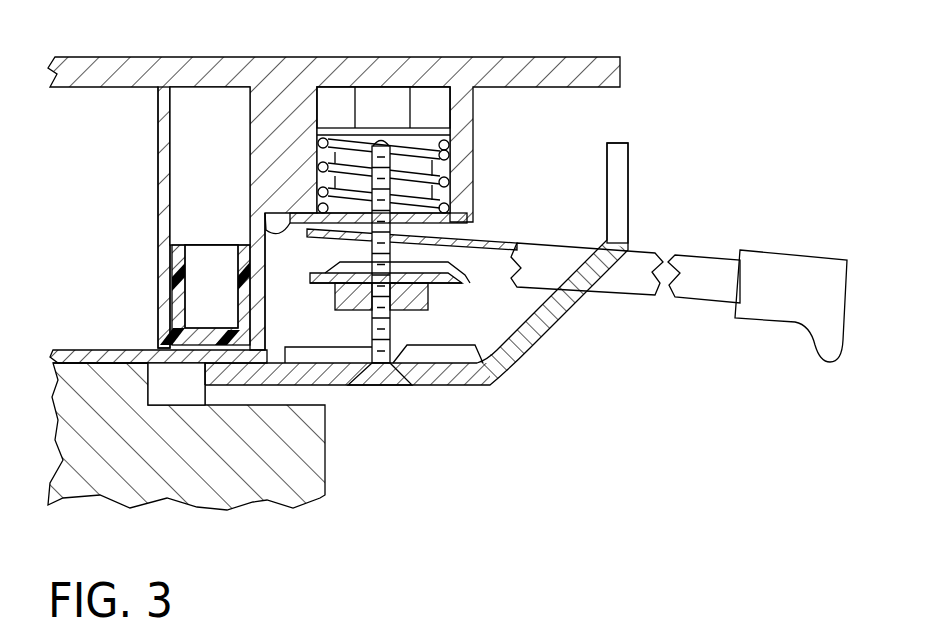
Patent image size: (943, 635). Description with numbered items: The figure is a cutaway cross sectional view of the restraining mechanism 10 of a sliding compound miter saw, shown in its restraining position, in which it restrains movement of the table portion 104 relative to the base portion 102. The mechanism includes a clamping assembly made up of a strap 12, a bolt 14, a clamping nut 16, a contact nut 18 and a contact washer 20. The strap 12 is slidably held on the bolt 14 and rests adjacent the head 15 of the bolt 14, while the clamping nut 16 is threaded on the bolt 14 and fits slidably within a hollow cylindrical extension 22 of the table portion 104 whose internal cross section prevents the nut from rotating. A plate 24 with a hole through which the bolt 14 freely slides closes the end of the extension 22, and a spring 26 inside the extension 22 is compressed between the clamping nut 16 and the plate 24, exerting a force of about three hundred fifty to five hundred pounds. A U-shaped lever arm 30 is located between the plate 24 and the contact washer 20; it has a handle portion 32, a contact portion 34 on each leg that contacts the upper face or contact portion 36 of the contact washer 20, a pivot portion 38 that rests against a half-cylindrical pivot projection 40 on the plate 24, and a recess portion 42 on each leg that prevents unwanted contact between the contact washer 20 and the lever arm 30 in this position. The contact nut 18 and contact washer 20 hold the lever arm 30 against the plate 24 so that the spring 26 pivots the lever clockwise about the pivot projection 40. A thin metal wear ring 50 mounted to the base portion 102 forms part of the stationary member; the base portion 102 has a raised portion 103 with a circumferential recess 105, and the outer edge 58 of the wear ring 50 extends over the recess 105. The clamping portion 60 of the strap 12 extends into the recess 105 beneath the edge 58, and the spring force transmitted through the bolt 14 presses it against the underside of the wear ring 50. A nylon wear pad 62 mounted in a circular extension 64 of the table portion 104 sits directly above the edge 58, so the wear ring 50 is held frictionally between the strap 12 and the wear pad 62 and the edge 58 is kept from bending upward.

The restraining mechanism 10 is at (505, 435).
The strap 12 is at (577, 307).
The bolt 14 is at (392, 323).
The head 15 is at (378, 388).
The clamping nut 16 is at (415, 125).
The contact nut 18 is at (430, 298).
The contact washer 20 is at (450, 268).
The hollow cylindrical extension 22 is at (458, 112).
The plate 24 is at (260, 214).
The spring 26 is at (446, 170).
The lever arm 30 is at (636, 260).
The handle portion 32 is at (772, 273).
The contact portion 34 is at (315, 246).
The contact portion of the contact washer 36 is at (327, 273).
The pivot portion 38 is at (458, 270).
The pivot projection 40 is at (447, 205).
The recess portion 42 is at (512, 240).
The wear ring 50 is at (102, 350).
The outer edge 58 is at (322, 498).
The clamping portion 60 is at (219, 363).
The wear pad 62 is at (268, 338).
The circular extension 64 is at (165, 158).
The base portion 102 is at (130, 467).
The raised portion 103 is at (133, 382).
The table portion 104 is at (90, 57).
The circumferential recess 105 is at (183, 397).